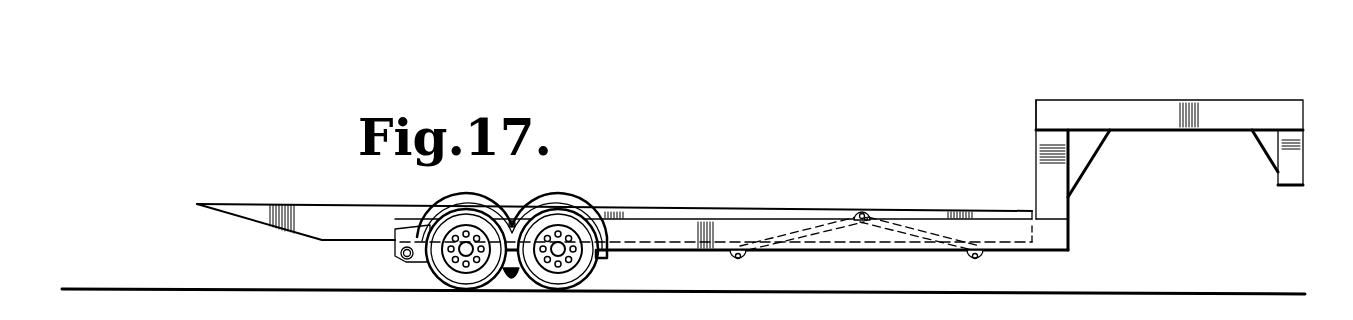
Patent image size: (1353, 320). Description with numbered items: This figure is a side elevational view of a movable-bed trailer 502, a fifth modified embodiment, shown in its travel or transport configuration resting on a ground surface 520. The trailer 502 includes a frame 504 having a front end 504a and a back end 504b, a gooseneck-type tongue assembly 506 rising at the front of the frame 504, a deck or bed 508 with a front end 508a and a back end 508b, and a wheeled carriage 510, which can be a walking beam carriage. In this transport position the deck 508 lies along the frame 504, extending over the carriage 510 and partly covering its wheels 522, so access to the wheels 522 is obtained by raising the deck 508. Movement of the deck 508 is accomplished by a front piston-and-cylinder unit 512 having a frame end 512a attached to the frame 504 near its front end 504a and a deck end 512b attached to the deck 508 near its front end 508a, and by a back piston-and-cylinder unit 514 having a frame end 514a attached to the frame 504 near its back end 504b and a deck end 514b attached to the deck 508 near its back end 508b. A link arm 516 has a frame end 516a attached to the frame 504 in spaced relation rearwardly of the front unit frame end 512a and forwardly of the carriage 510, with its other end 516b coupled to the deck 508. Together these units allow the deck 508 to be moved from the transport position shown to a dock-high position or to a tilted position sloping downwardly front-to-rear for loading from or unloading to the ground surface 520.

The movable-bed trailer 502 is at (745, 163).
The frame 504 is at (1057, 254).
The front end of frame 504a is at (1070, 224).
The back end of frame 504b is at (395, 228).
The gooseneck-type tongue assembly 506 is at (1301, 100).
The deck 508 is at (672, 210).
The front end of deck 508a is at (1032, 210).
The back end of deck 508b is at (197, 203).
The wheeled carriage 510 is at (596, 262).
The front piston-and-cylinder unit 512 is at (909, 232).
The frame end of front piston-and-cylinder unit 512a is at (977, 261).
The deck end of front piston-and-cylinder unit 512b is at (866, 214).
The back piston-and-cylinder unit 514 is at (432, 266).
The frame end of back piston-and-cylinder unit 514a is at (513, 212).
The deck end of back piston-and-cylinder unit 514b is at (396, 258).
The link arm 516 is at (819, 238).
The frame end of link arm 516a is at (862, 212).
The deck end of link arm 516b is at (746, 259).
The ground surface 520 is at (1205, 293).
The wheels 522 is at (511, 276).